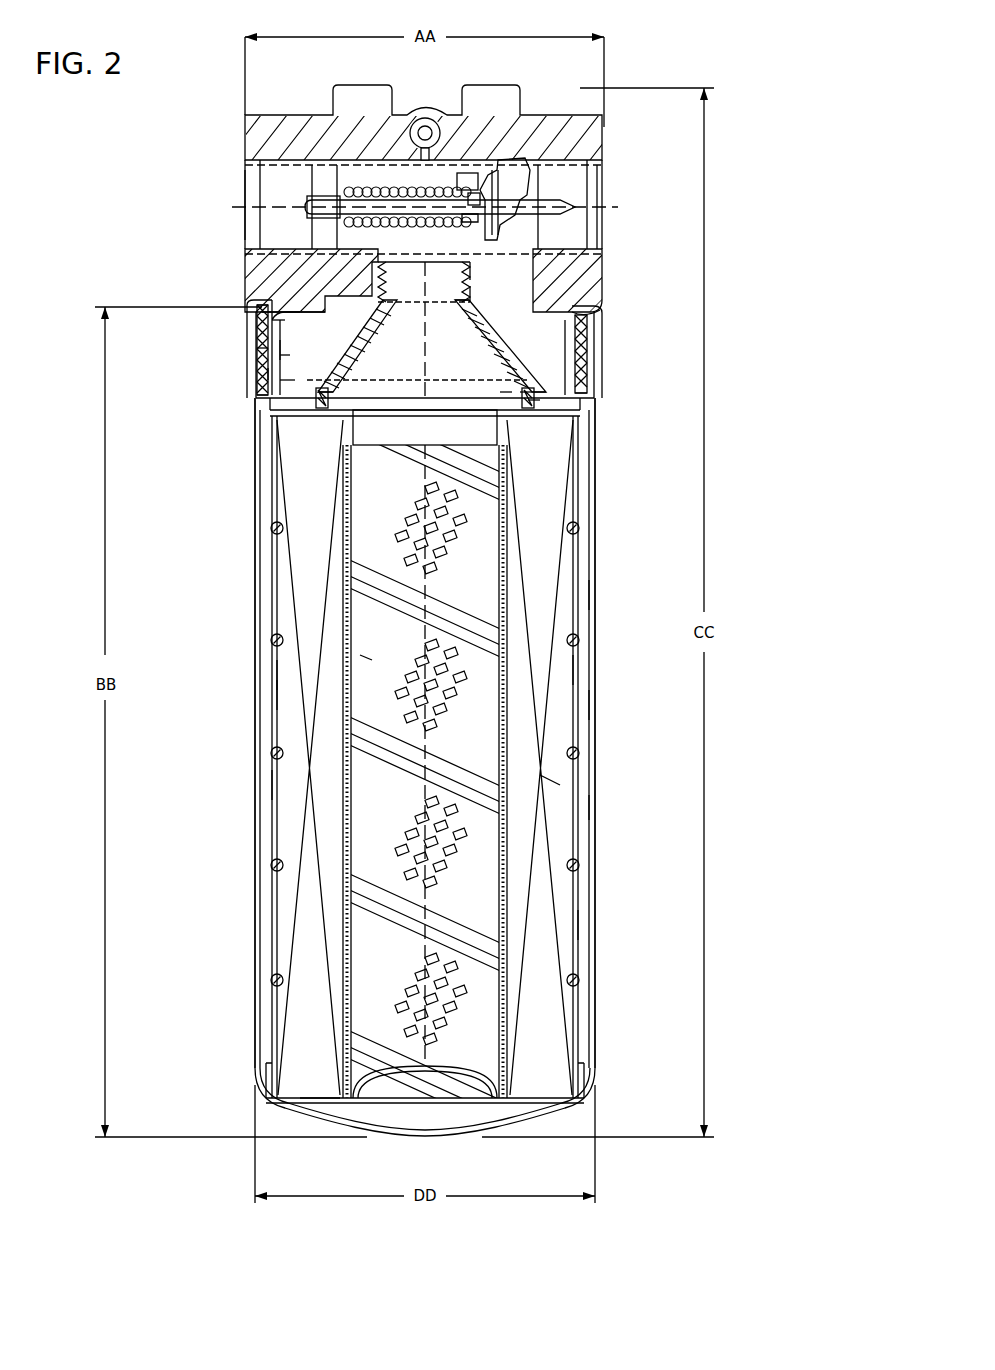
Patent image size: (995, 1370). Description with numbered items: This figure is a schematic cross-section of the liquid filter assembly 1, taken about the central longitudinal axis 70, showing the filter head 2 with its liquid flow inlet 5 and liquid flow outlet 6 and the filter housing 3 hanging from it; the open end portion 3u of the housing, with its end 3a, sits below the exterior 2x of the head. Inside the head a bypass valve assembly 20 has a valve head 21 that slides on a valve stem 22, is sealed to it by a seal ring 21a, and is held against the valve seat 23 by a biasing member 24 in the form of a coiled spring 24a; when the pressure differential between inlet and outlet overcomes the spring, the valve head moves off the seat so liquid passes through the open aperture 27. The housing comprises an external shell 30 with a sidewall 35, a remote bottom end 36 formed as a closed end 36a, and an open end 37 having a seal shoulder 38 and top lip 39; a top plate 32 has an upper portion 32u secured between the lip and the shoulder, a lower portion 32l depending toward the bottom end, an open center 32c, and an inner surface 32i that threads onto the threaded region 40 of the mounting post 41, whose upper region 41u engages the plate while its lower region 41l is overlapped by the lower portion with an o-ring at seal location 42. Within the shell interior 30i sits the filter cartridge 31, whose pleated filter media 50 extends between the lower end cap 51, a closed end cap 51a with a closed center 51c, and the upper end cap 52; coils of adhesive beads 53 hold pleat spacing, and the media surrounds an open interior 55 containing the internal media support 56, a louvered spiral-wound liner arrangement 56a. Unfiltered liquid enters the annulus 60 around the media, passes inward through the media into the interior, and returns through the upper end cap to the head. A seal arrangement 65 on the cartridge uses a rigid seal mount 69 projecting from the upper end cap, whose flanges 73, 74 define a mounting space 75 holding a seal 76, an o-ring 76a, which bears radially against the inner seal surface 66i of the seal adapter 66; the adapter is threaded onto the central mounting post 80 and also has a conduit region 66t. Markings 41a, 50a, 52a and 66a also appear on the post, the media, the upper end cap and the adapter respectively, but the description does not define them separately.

The liquid filter assembly 1 is at (632, 470).
The filter head 2 is at (452, 135).
The exterior of filter head 2x is at (600, 270).
The filter housing 3 is at (596, 558).
The end of filter housing 3a is at (597, 595).
The open end portion of filter housing 3u is at (598, 335).
The liquid flow inlet 5 is at (593, 163).
The liquid flow outlet 6 is at (300, 130).
The bypass valve assembly 20 is at (465, 178).
The valve head 21 is at (497, 177).
The seal ring 21a is at (466, 218).
The valve stem 22 is at (552, 207).
The valve seat 23 is at (480, 212).
The biasing member 24 is at (365, 188).
The coiled spring 24a is at (360, 216).
The open aperture 27 is at (490, 192).
The external shell 30 is at (597, 705).
The interior of shell 30i is at (262, 787).
The filter cartridge 31 is at (550, 782).
The top plate 32 is at (262, 342).
The open center 32c is at (272, 348).
The inner surface 32i is at (293, 291).
The lower portion of top plate 32l is at (272, 373).
The upper portion of top plate 32u is at (265, 330).
The sidewall 35 is at (597, 808).
The remote bottom end 36 is at (452, 1142).
The closed end 36a is at (383, 1138).
The open end 37 is at (602, 323).
The seal shoulder 38 is at (598, 355).
The top lip 39 is at (597, 315).
The threaded region 40 is at (280, 340).
The mounting post 41 is at (283, 350).
The retainer leg end 41a is at (280, 382).
The lower region of mounting post 41l is at (280, 358).
The upper region of mounting post 41u is at (272, 340).
The seal location 42 is at (268, 373).
The filter media 50 is at (543, 888).
The filter element outer surface 50a is at (275, 693).
The lower end cap 51 is at (533, 1102).
The closed end cap 51a is at (320, 1102).
The closed center 51c is at (402, 1070).
The upper end cap 52 is at (567, 412).
The upper end plate boss 52a is at (362, 445).
The coils of adhesive beads 53 is at (271, 981).
The open interior 55 is at (352, 592).
The internal media support 56 is at (453, 582).
The liner arrangement 56a is at (373, 657).
The annulus 60 is at (258, 676).
The seal arrangement 65 is at (533, 403).
The seal adapter 66 is at (510, 337).
The cone upper portion 66a is at (470, 285).
The inner seal surface 66i is at (542, 400).
The conduit region 66t is at (464, 340).
The rigid seal mount 69 is at (508, 392).
The central axis 70 is at (425, 473).
The flange 73 is at (322, 390).
The flange 74 is at (327, 406).
The mounting space 75 is at (528, 392).
The seal 76 is at (522, 392).
The o-ring 76a is at (330, 393).
The central mounting post 80 is at (468, 298).